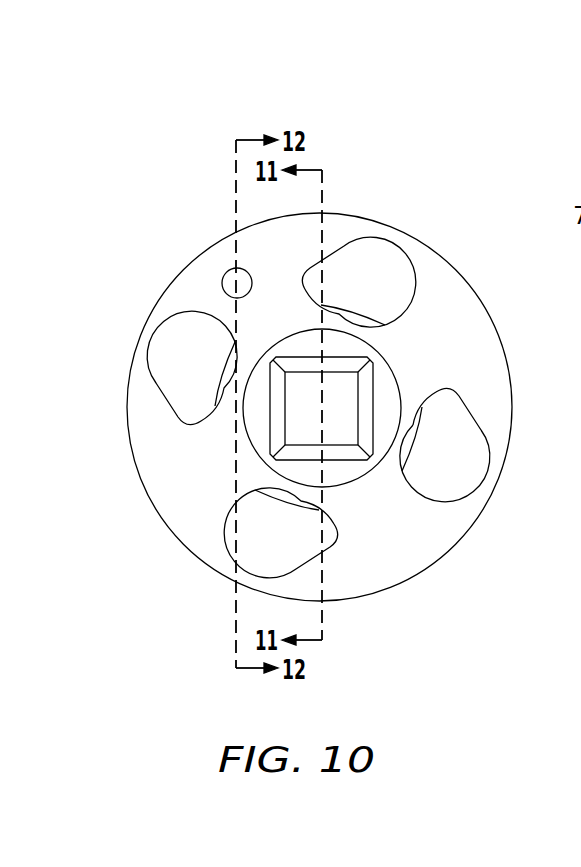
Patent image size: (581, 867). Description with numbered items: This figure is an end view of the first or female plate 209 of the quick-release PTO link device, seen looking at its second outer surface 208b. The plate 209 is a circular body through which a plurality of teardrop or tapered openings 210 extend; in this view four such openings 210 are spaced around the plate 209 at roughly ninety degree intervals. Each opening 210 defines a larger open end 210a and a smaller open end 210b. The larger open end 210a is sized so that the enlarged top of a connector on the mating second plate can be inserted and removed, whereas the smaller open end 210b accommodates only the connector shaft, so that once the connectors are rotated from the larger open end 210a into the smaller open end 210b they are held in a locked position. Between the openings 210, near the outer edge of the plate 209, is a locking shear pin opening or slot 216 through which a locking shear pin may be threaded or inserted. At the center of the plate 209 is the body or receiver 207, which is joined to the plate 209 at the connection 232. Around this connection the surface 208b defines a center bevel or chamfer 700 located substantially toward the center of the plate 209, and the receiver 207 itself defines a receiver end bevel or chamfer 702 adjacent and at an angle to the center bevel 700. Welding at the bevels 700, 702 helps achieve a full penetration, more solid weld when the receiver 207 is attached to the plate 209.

The body or receiver 207 is at (422, 437).
The second outer surface 208b is at (476, 326).
The first plate 209 is at (419, 241).
The openings 210 is at (490, 434).
The larger open end 210a is at (476, 495).
The smaller open end 210b is at (472, 381).
The locking shear pin opening or slot 216 is at (222, 279).
The connection 232 is at (372, 483).
The center bevel or chamfer 700 is at (253, 450).
The receiver end bevel or chamfer 702 is at (342, 458).